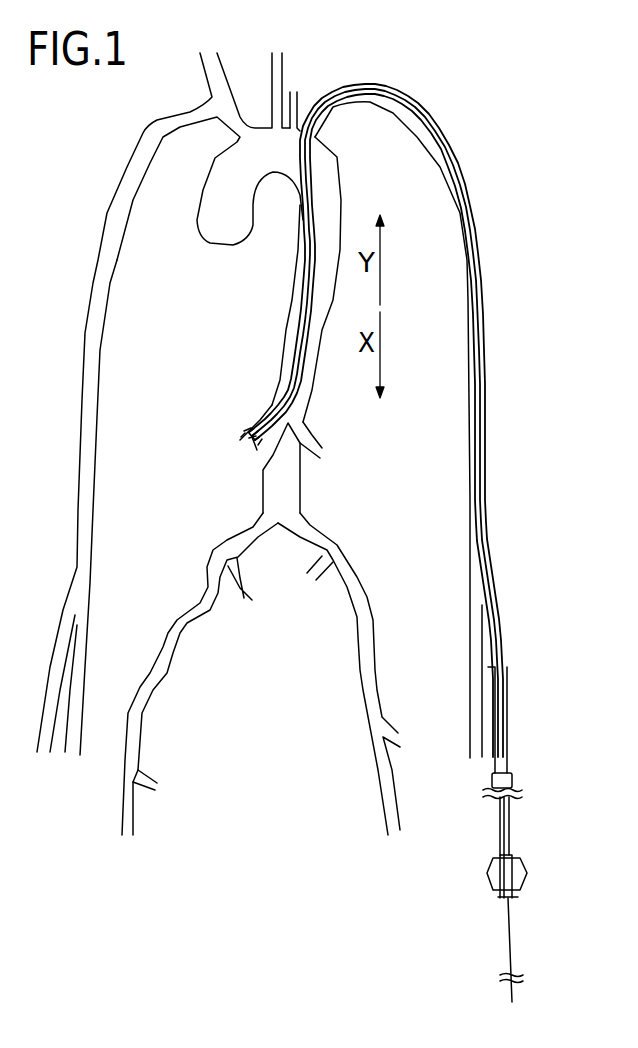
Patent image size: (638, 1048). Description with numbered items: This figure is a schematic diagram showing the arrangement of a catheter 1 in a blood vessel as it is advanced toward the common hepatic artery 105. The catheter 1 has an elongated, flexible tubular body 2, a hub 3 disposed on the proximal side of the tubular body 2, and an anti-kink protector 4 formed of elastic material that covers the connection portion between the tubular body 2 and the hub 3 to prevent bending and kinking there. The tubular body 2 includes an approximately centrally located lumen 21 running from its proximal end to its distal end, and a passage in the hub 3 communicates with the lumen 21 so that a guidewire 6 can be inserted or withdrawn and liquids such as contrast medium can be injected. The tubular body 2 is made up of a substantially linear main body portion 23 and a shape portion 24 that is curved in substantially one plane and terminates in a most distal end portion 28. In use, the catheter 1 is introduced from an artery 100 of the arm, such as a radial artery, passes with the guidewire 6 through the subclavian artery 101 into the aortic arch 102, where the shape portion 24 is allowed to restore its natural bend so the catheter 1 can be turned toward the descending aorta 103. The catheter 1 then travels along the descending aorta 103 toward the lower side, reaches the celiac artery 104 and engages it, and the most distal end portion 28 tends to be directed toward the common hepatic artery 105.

The catheter 1 is at (506, 810).
The tubular body 2 is at (497, 805).
The hub 3 is at (510, 870).
The anti-kink protector 4 is at (508, 832).
The guidewire 6 is at (511, 938).
The lumen 21 is at (488, 471).
The main body portion 23 is at (483, 373).
The shape portion 24 is at (302, 414).
The most distal end portion 28 is at (268, 418).
The artery of the arm 100 is at (505, 655).
The subclavian artery 101 is at (342, 88).
The aortic arch 102 is at (293, 120).
The descending aorta 103 is at (287, 322).
The celiac artery 104 is at (273, 393).
The common hepatic artery 105 is at (247, 433).